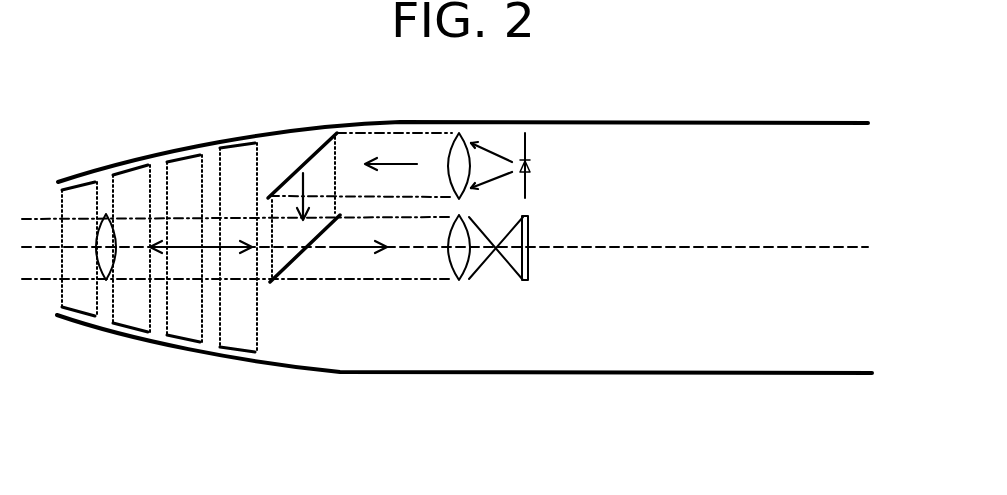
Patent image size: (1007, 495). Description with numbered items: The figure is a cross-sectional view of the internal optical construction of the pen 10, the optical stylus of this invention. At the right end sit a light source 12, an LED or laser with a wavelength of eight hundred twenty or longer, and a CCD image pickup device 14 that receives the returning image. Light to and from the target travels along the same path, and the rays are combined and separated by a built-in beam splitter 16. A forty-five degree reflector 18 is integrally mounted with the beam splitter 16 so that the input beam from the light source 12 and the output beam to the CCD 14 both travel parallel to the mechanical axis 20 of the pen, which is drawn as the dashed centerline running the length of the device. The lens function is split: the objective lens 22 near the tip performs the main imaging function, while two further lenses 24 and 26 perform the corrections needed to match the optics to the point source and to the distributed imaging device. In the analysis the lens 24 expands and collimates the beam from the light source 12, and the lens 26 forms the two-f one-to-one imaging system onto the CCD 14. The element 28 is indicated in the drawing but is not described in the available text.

The pen 10 is at (718, 122).
The light source 12 is at (533, 165).
The CCD image pickup device 14 is at (528, 278).
The beam splitter 16 is at (293, 267).
The 45° reflector 18 is at (313, 150).
The mechanical axis 20 is at (720, 248).
The objective lens 22 is at (100, 237).
The lens 24 is at (452, 157).
The lens 26 is at (453, 257).
The segments 28 is at (80, 343).